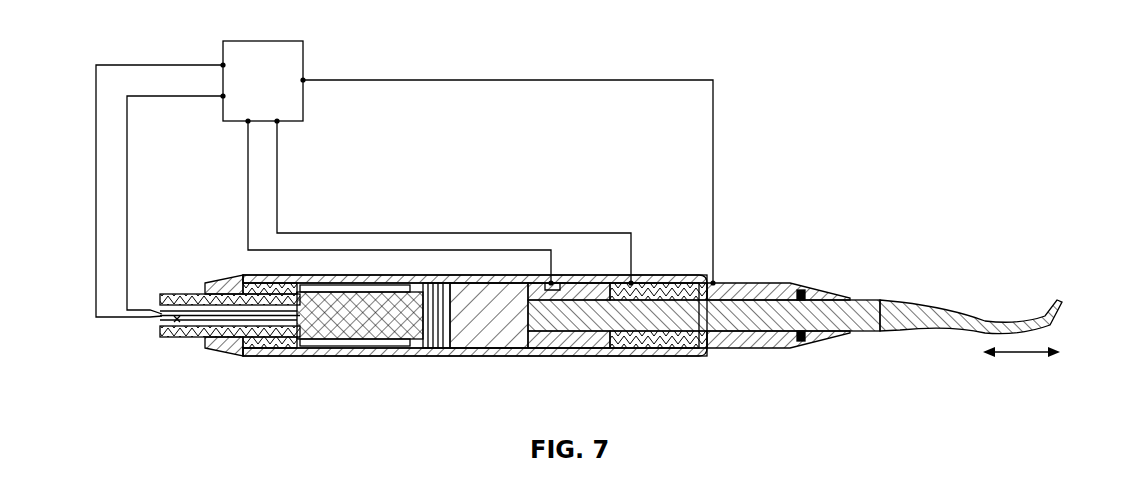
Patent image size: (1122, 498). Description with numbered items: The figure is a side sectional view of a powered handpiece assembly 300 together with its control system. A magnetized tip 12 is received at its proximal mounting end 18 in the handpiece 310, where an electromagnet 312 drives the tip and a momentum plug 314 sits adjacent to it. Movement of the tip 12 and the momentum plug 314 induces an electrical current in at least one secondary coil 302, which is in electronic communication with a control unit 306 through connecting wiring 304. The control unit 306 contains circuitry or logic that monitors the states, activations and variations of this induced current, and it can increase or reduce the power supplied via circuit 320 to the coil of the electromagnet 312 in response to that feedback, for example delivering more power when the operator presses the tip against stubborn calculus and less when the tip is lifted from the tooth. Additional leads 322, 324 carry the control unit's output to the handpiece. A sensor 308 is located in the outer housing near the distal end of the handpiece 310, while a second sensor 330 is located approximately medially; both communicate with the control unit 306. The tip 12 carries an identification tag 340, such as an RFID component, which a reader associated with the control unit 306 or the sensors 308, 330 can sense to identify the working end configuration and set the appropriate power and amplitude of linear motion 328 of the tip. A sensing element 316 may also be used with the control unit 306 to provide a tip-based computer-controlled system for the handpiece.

The tip 12 is at (897, 305).
The mounting end 18 is at (573, 352).
The powered handpiece assembly 300 is at (538, 188).
The secondary coil 302 is at (693, 278).
The wire to housing 304 is at (278, 208).
The control unit 306 is at (182, 40).
The sensor 308 is at (730, 283).
The handpiece 310 is at (728, 350).
The electromagnet 312 is at (357, 322).
The momentum plug 314 is at (493, 335).
The sensing element 316 is at (247, 208).
The circuit 320 is at (130, 208).
The wire to controller 322 is at (206, 97).
The wire to controller 324 is at (176, 64).
The linear motion 328 is at (1020, 355).
The sensor 330 is at (562, 278).
The identification tag 340 is at (847, 312).